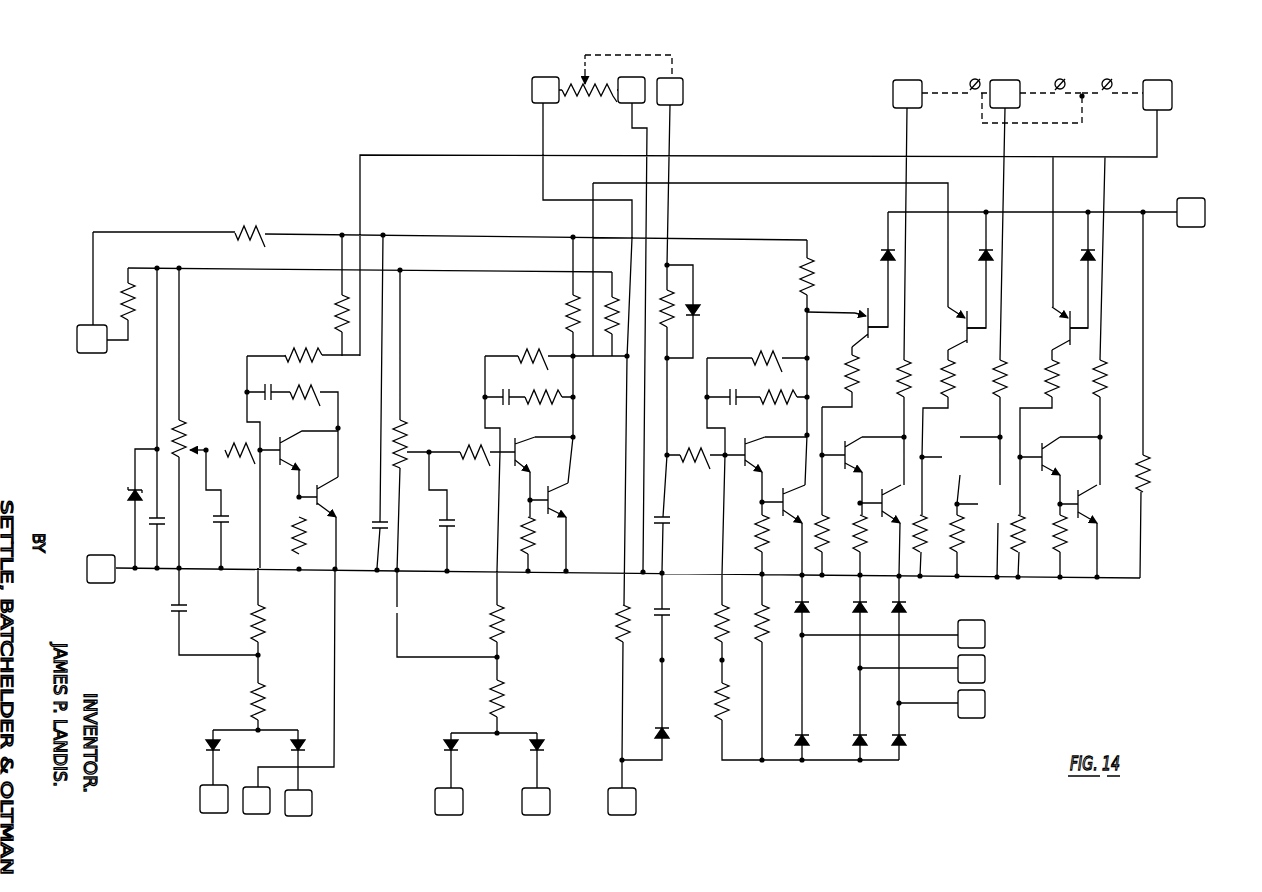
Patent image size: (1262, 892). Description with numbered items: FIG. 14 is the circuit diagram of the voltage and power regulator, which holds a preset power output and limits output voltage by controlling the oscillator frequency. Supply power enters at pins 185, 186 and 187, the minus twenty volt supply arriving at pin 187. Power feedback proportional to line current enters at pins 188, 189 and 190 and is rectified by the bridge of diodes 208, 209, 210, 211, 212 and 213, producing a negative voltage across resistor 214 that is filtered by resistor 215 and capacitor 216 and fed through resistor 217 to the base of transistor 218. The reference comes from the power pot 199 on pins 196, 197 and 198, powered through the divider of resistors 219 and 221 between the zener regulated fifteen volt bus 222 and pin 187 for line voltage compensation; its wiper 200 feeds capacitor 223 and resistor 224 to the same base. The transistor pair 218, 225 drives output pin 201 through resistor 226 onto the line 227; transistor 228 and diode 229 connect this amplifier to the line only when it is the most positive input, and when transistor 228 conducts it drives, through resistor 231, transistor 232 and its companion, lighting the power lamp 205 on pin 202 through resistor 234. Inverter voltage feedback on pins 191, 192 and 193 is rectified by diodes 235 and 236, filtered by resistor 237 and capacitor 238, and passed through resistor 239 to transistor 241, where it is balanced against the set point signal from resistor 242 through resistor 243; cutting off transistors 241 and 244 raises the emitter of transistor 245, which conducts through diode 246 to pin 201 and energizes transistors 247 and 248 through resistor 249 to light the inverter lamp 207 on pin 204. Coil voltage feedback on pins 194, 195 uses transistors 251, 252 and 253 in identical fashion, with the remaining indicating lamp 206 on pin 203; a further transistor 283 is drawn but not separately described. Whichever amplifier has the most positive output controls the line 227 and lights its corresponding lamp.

The supply pin 185 is at (77, 333).
The supply pin 186 is at (97, 555).
The supply pin 187 is at (636, 812).
The power feedback pin 188 is at (985, 636).
The power feedback pin 189 is at (985, 671).
The power feedback pin 190 is at (985, 706).
The voltage feedback pin 191 is at (200, 808).
The voltage feedback pin 192 is at (252, 812).
The voltage feedback pin 193 is at (305, 808).
The voltage feedback pin 194 is at (458, 812).
The voltage feedback pin 195 is at (548, 812).
The potentiometer pin 196 is at (532, 88).
The potentiometer pin 197 is at (635, 77).
The potentiometer pin 198 is at (672, 88).
The power pot 199 is at (575, 93).
The wiper 200 is at (583, 72).
The output pin 201 is at (1191, 210).
The lamp pin 202 is at (900, 86).
The lamp pin 203 is at (1005, 88).
The lamp pin 204 is at (1165, 88).
The power lamp 205 is at (970, 86).
The indicating lamp 206 is at (1073, 72).
The inverter lamp 207 is at (1110, 82).
The diode 208 is at (905, 745).
The diode 209 is at (862, 748).
The diode 210 is at (806, 740).
The diode 211 is at (906, 610).
The diode 212 is at (864, 612).
The diode 213 is at (806, 620).
The resistor 214 is at (760, 618).
The resistor 215 is at (718, 698).
The capacitor 216 is at (666, 612).
The resistor 217 is at (718, 625).
The transistor 218 is at (750, 470).
The resistor 219 is at (620, 620).
The resistor 221 is at (610, 340).
The zener regulated bus 222 is at (455, 273).
The capacitor 223 is at (668, 519).
The resistor 224 is at (695, 462).
The transistor 225 is at (784, 492).
The resistor 226 is at (1150, 468).
The line 227 is at (1115, 212).
The transistor 228 is at (866, 312).
The diode 229 is at (884, 257).
The resistor 231 is at (858, 368).
The transistor 232 is at (850, 435).
The resistor 234 is at (945, 368).
The diode 235 is at (206, 742).
The diode 236 is at (291, 746).
The resistor 237 is at (266, 696).
The capacitor 238 is at (184, 608).
The resistor 239 is at (266, 612).
The transistor 241 is at (279, 437).
The set point resistor 242 is at (185, 432).
The resistor 243 is at (236, 458).
The transistor 244 is at (316, 492).
The transistor 245 is at (1080, 340).
The diode 246 is at (1096, 258).
The transistor 247 is at (1048, 475).
The transistor 248 is at (1088, 516).
The resistor 249 is at (1048, 366).
The transistor 251 is at (522, 450).
The transistor 252 is at (560, 500).
The transistor 253 is at (970, 315).
The transistor 283 is at (890, 505).